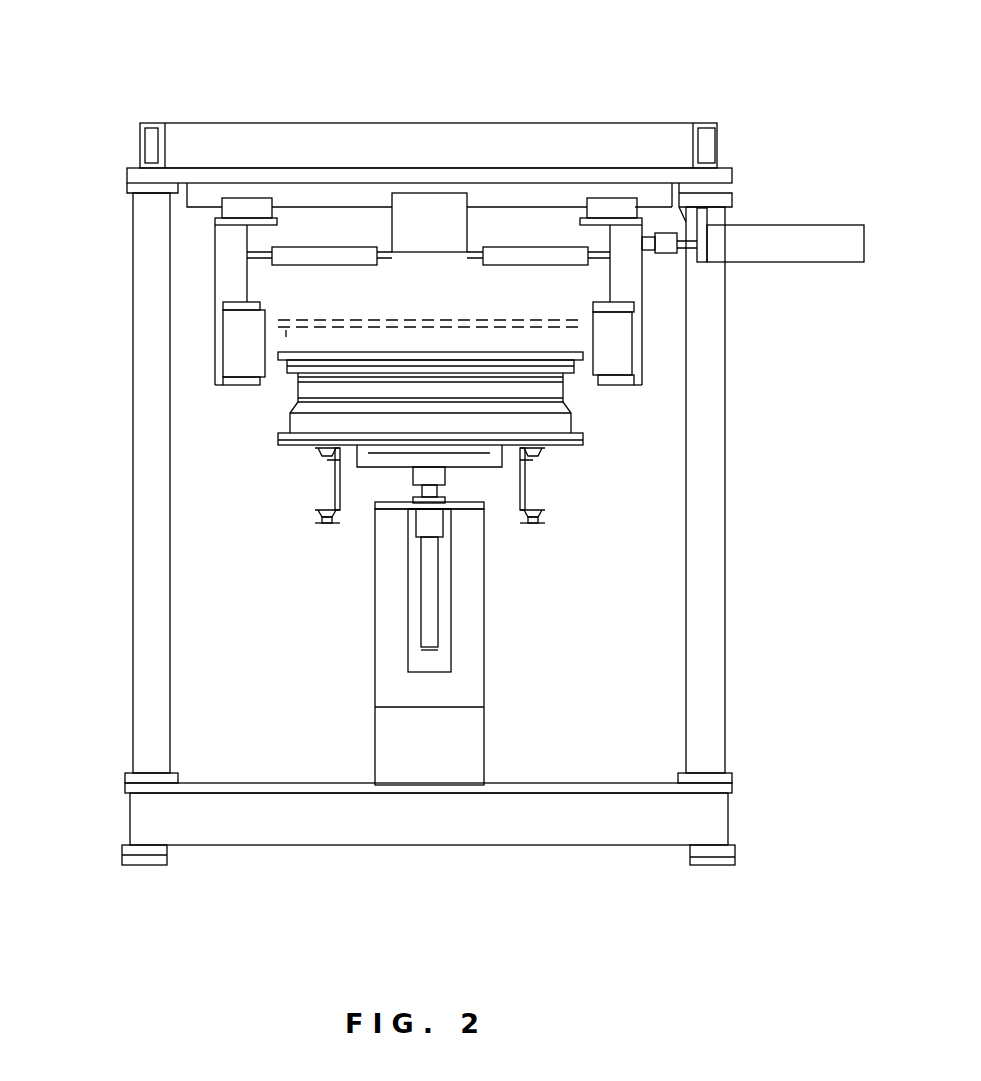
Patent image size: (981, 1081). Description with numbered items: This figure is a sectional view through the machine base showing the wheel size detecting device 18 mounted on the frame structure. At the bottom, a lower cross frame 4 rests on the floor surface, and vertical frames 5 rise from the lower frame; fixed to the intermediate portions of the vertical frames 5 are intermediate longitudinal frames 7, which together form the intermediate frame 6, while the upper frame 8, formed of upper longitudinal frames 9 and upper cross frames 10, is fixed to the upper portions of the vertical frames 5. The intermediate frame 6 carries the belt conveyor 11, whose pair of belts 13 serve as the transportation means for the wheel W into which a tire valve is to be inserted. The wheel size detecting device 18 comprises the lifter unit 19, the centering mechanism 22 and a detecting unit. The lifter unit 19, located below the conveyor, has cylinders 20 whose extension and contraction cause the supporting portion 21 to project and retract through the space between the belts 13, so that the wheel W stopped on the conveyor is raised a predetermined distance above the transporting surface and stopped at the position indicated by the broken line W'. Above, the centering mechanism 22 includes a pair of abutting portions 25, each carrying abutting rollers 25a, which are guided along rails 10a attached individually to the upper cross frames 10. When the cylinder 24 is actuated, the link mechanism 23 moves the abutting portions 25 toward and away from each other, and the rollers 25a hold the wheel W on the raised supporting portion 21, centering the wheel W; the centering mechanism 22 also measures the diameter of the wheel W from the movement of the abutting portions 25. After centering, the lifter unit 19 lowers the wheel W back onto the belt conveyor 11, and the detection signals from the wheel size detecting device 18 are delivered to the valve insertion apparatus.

The lower cross frame 4 is at (434, 830).
The vertical frame 5 is at (150, 612).
The intermediate frame 6 is at (430, 554).
The intermediate longitudinal frame 7 is at (320, 486).
The upper frame 8 is at (557, 124).
The upper longitudinal frame 9 is at (146, 143).
The upper cross frame 10 is at (387, 128).
The rail 10a is at (205, 185).
The belt conveyor 11 is at (405, 514).
The belt 13 is at (325, 524).
The wheel size detecting device 18 is at (428, 128).
The lifter unit 19 is at (434, 615).
The cylinder 20 is at (478, 648).
The supporting portion 21 is at (465, 455).
The centering mechanism 22 is at (206, 279).
The link mechanism 23 is at (300, 266).
The cylinder 24 is at (780, 235).
The abutting portion 25 is at (432, 375).
The abutting roller 25a is at (240, 386).
The wheel W is at (462, 418).
The raised wheel position W' is at (430, 308).